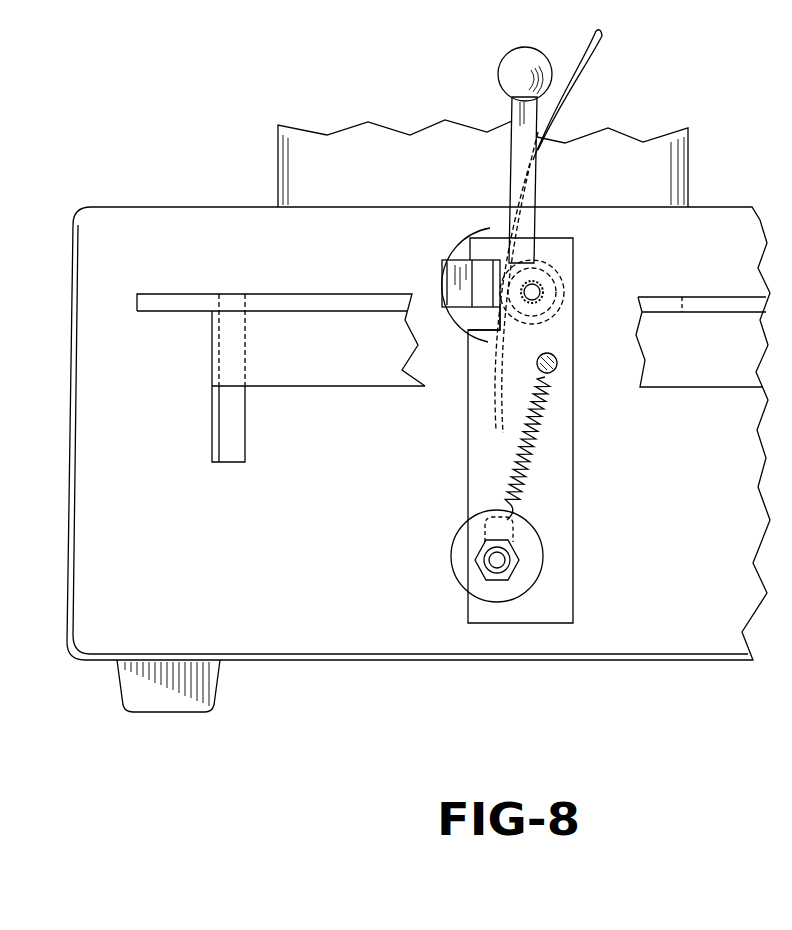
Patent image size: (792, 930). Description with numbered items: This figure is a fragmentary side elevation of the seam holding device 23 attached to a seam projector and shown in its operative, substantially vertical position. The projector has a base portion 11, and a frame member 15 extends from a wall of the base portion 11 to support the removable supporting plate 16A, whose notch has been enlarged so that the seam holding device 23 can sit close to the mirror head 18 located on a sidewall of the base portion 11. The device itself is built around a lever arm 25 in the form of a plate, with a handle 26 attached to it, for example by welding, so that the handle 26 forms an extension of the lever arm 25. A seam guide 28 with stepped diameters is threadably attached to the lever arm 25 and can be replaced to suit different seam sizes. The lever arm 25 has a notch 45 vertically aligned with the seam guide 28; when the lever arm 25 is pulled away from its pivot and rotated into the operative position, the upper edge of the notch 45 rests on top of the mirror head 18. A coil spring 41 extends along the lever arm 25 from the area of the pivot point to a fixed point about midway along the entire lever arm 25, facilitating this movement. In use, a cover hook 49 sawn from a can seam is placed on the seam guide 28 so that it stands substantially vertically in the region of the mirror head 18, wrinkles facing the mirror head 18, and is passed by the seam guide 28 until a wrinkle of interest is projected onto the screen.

The base portion 11 is at (108, 630).
The frame member 15 is at (290, 370).
The supporting plate 16A is at (190, 302).
The mirror head 18 is at (462, 295).
The seam holding device 23 is at (603, 517).
The lever arm 25 is at (485, 430).
The handle 26 is at (516, 119).
The seam guide 28 is at (563, 293).
The coil spring 41 is at (538, 428).
The notch 45 is at (477, 317).
The cover hook 49 is at (574, 75).